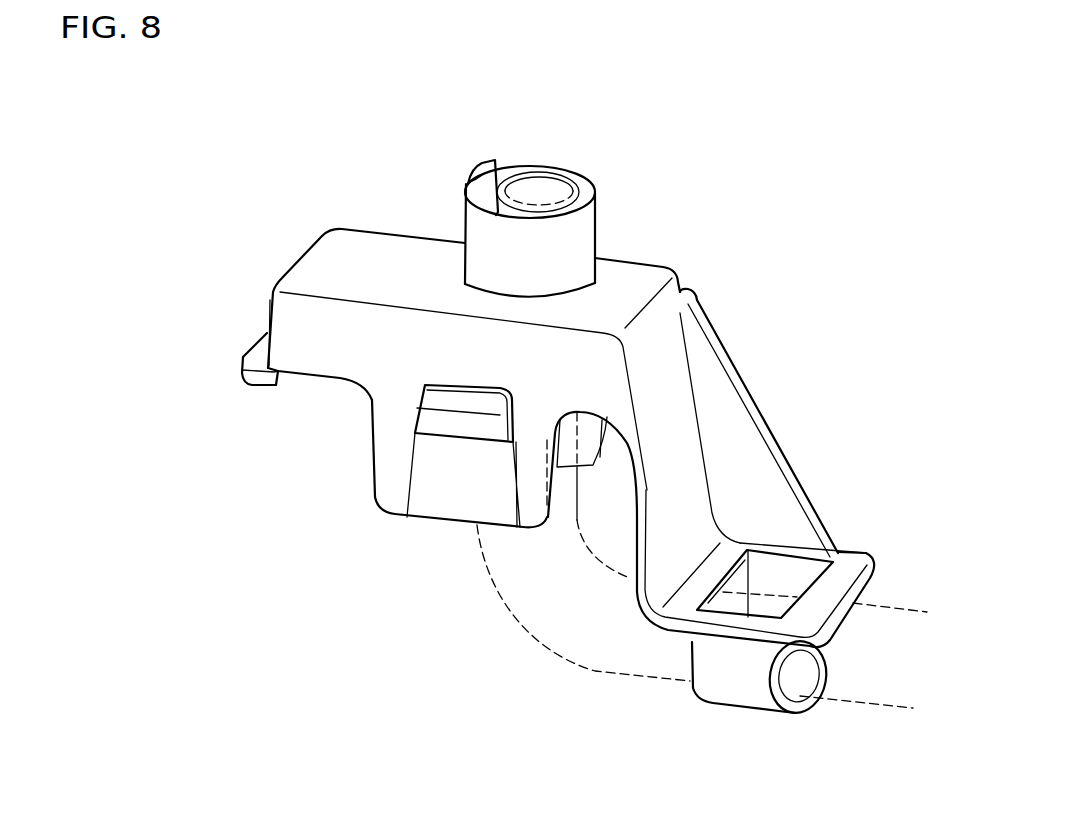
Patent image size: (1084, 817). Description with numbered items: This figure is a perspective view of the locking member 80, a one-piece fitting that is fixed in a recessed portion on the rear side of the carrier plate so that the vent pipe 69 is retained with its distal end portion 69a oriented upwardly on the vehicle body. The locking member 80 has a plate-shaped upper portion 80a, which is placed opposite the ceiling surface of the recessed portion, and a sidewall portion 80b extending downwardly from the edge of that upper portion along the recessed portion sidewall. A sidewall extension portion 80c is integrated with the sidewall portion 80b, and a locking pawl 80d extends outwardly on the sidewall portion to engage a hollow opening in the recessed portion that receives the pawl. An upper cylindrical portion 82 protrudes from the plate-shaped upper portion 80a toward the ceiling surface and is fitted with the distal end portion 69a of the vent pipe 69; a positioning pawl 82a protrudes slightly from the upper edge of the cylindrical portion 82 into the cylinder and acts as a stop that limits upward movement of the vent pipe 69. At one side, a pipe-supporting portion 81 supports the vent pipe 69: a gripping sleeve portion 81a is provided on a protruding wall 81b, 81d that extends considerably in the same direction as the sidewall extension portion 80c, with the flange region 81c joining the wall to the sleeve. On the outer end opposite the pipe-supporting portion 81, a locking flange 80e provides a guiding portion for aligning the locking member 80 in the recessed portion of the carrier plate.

The locking member 80 is at (740, 218).
The plate-shaped upper portion 80a is at (325, 260).
The sidewall portion 80b is at (343, 362).
The sidewall extension portion 80c is at (470, 483).
The locking pawl 80d is at (438, 420).
The locking flange 80e is at (257, 362).
The pipe-supporting portion 81 is at (646, 635).
The gripping sleeve portion 81a is at (725, 695).
The protruding wall 81b is at (660, 565).
The flange with window 81c is at (692, 681).
The protruding wall 81d is at (728, 433).
The upper cylindrical portion 82 is at (585, 233).
The positioning pawl 82a is at (478, 177).
The vent pipe 69 is at (893, 608).
The distal end portion 69a is at (563, 172).